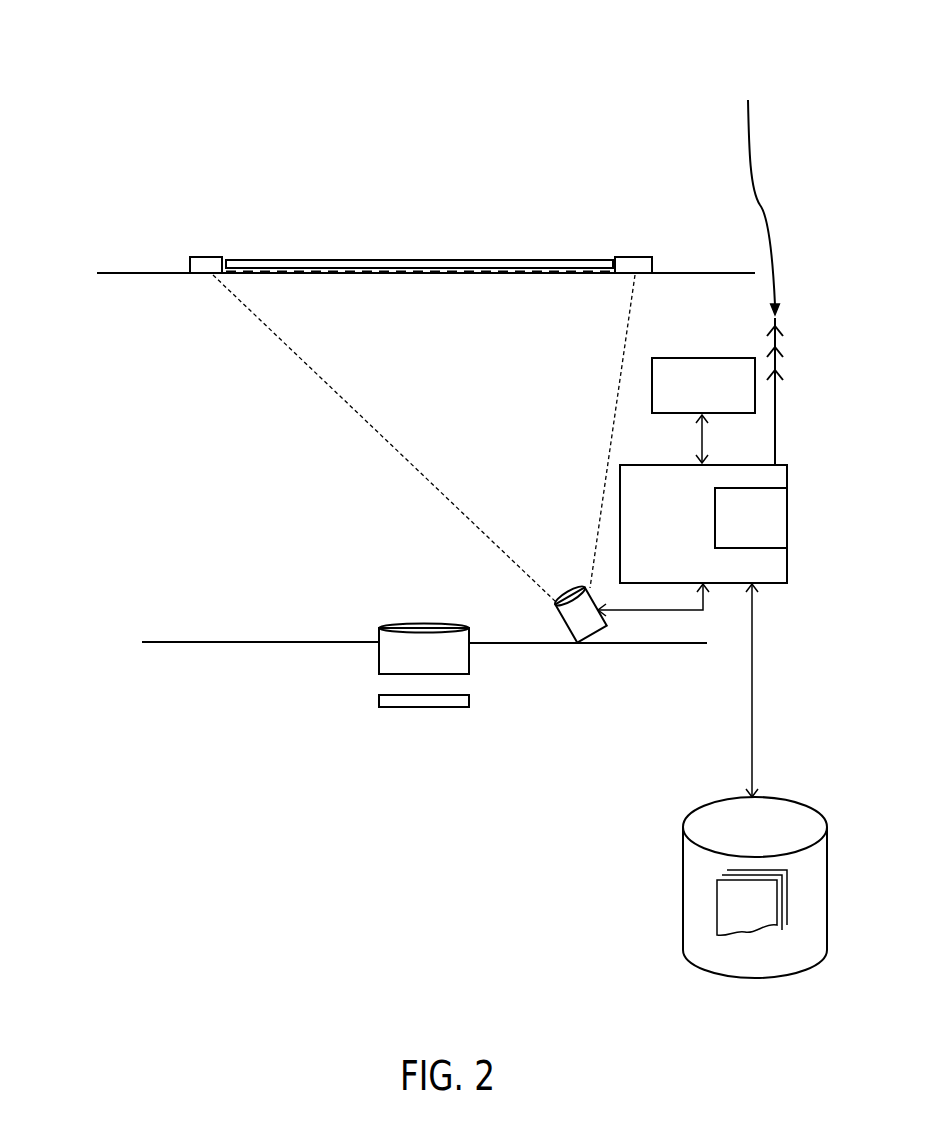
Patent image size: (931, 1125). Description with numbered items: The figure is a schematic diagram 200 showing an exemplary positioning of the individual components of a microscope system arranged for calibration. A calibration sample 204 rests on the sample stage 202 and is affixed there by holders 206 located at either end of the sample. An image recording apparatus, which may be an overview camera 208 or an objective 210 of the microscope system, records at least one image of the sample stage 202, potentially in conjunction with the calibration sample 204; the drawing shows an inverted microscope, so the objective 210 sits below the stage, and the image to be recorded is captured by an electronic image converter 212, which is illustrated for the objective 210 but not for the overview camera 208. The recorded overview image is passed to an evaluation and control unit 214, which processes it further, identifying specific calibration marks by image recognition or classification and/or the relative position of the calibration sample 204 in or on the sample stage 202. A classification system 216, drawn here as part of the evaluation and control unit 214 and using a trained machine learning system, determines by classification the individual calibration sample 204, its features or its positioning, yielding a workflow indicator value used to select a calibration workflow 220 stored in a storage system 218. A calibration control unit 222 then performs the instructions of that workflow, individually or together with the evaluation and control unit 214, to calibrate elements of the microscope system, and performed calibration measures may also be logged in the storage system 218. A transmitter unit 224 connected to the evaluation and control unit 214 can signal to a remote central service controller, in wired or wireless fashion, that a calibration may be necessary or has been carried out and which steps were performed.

The schematic diagram 200 is at (228, 52).
The sample stage 202 is at (129, 261).
The calibration sample 204 is at (450, 249).
The holders 206 is at (201, 249).
The overview camera 208 is at (611, 641).
The objective 210 is at (478, 663).
The electronic image converter 212 is at (474, 710).
The evaluation and control unit 214 is at (673, 497).
The classification system 216 is at (768, 529).
The storage system 218 is at (770, 841).
The calibration workflow 220 is at (733, 902).
The calibration control unit 222 is at (725, 398).
The transmitter unit 224 is at (751, 263).